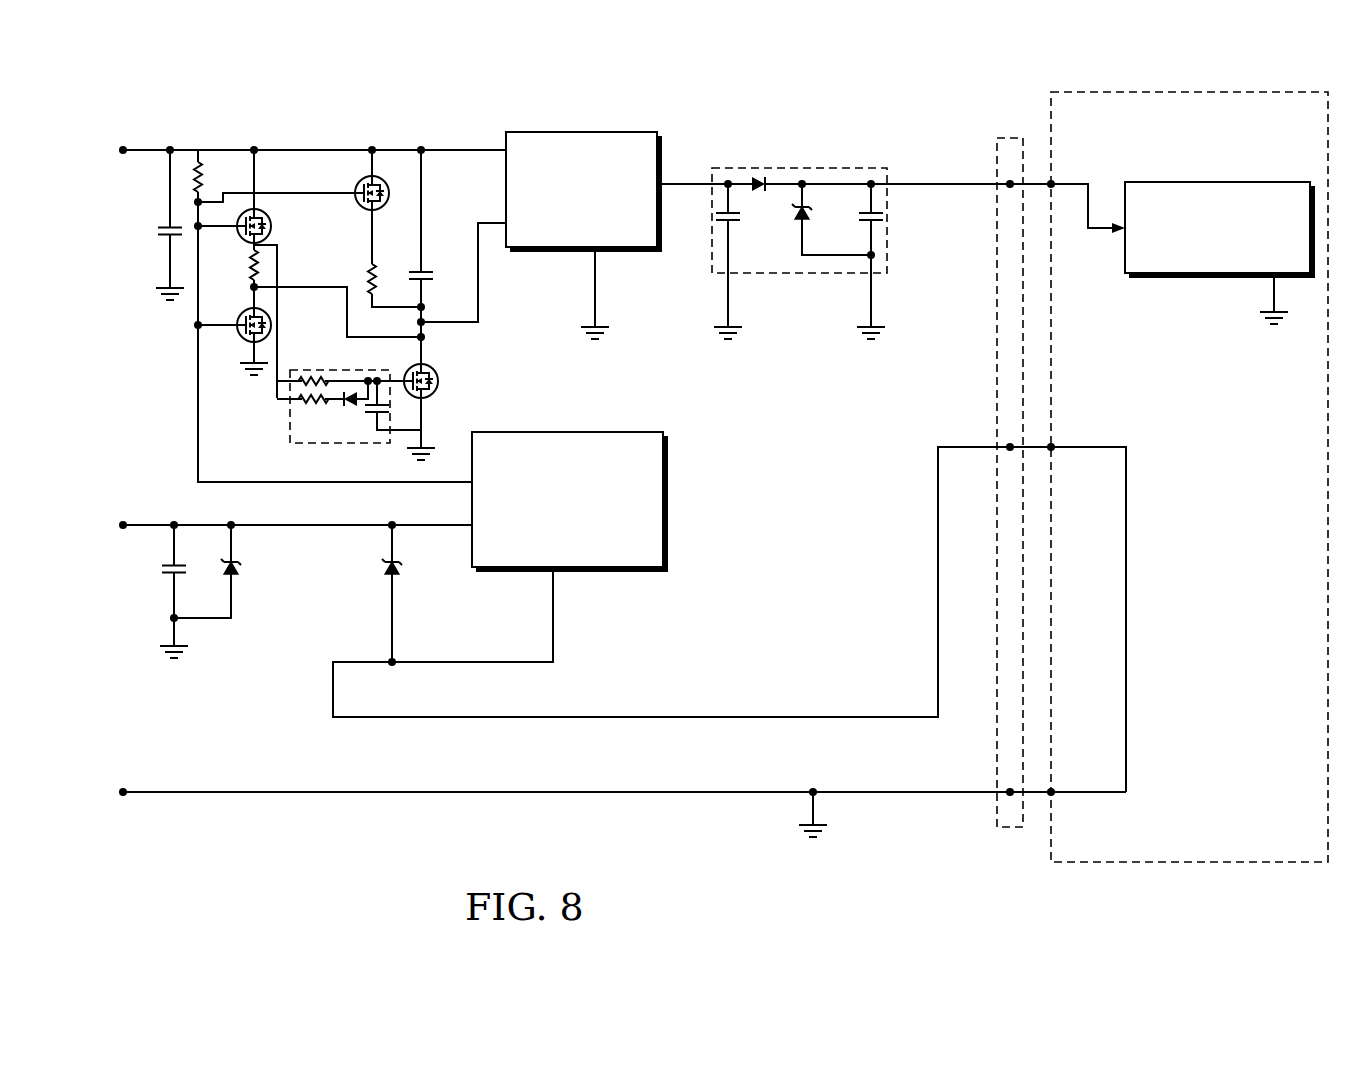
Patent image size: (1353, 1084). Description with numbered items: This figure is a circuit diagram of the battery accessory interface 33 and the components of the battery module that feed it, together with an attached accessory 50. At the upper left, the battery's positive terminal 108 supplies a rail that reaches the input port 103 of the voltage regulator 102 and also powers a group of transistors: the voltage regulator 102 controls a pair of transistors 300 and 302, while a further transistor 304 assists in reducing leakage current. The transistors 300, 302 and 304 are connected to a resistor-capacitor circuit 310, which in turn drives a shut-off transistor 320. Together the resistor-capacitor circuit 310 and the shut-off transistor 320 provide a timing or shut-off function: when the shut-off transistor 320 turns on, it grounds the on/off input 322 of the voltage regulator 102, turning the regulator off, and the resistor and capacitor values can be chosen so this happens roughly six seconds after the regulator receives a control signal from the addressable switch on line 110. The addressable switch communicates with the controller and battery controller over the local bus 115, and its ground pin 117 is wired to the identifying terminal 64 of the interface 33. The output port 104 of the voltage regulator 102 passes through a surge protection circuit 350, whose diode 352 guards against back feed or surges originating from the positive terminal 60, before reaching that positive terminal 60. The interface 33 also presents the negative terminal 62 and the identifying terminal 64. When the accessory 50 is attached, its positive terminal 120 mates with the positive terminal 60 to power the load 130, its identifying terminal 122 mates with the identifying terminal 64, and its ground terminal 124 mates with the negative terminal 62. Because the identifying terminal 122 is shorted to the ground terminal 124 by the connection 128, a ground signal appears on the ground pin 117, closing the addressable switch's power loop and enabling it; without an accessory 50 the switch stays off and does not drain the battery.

The positive terminal 108 is at (123, 148).
The input port 103 is at (488, 148).
The line 110 is at (198, 465).
The transistor 304 is at (355, 186).
The transistor 300 is at (271, 227).
The transistor 302 is at (271, 325).
The on/off input 322 is at (478, 267).
The shut-off transistor 320 is at (438, 379).
The resistor-capacitor circuit 310 is at (290, 432).
The voltage regulator 102 is at (633, 250).
The output port 104 is at (690, 182).
The surge protection circuit 350 is at (830, 168).
The diode 352 is at (760, 180).
The battery accessory interface 33 is at (1010, 138).
The positive terminal 60 is at (1008, 182).
The negative terminal 62 is at (1008, 790).
The identifying terminal 64 is at (1008, 445).
The positive terminal 120 is at (1053, 183).
The identifying terminal 122 is at (1053, 446).
The ground terminal 124 is at (1053, 791).
The connection 128 is at (1126, 589).
The load 130 is at (1215, 182).
The accessory 50 is at (1189, 477).
The local bus 115 is at (291, 530).
The ground pin 117 is at (553, 612).